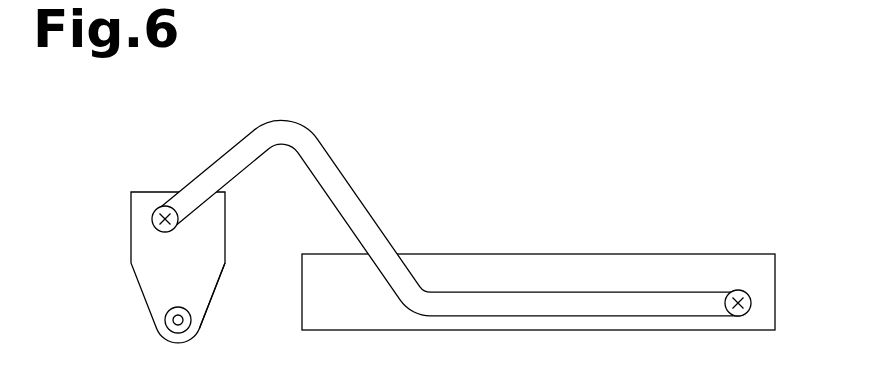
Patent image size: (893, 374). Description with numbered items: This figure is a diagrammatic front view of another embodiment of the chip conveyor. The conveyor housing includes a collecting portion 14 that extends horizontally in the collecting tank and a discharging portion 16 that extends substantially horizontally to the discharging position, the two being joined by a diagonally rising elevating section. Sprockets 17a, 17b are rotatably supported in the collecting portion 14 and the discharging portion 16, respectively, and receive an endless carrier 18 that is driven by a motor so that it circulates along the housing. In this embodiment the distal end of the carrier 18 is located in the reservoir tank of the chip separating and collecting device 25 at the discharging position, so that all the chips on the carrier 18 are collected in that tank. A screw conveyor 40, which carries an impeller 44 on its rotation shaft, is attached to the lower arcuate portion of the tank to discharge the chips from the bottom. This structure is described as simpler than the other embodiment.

The collecting portion 14 is at (669, 291).
The discharging portion 16 is at (451, 187).
The sprocket 17a is at (751, 300).
The sprocket 17b is at (161, 207).
The endless carrier 18 is at (356, 188).
The chip separating and collecting device 25 is at (137, 278).
The screw conveyor 40 is at (208, 307).
The impeller 44 is at (165, 320).